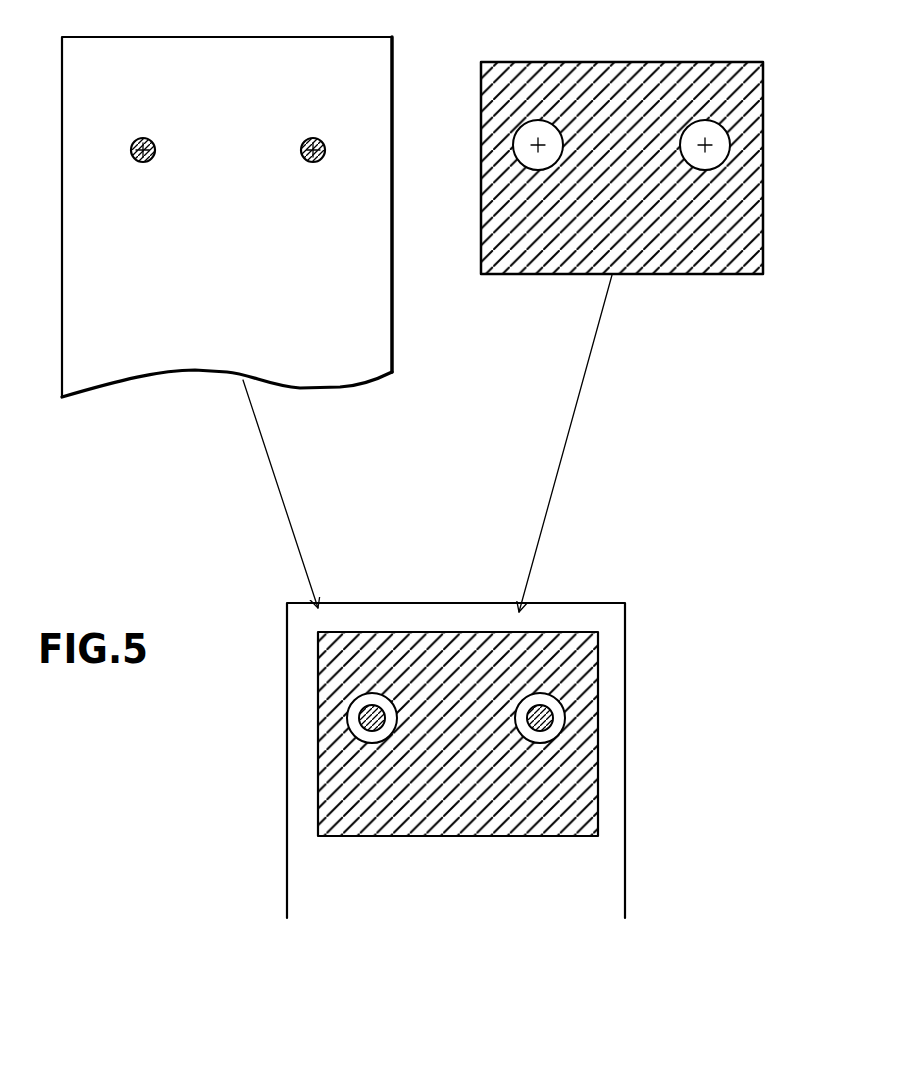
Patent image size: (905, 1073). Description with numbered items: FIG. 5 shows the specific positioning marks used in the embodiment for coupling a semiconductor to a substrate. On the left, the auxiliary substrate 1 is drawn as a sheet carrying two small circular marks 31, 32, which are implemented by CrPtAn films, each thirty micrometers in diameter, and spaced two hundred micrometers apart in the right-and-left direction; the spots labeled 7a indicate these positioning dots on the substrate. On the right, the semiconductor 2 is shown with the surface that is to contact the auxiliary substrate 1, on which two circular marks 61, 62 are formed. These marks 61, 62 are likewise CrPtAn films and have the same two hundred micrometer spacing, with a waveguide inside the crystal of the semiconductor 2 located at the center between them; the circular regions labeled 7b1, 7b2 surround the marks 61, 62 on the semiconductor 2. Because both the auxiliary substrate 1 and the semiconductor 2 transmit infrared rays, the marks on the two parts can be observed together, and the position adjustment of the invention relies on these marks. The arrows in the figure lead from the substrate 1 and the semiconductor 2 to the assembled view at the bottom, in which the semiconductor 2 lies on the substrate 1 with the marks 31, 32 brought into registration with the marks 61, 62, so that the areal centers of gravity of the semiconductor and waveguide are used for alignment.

The auxiliary substrate 1 is at (345, 357).
The semiconductor 2 is at (737, 222).
The mark 31 is at (135, 140).
The mark 32 is at (305, 140).
The positioning dots on sheet 1 7a is at (153, 140).
The circular mark 61 is at (526, 122).
The circular mark 62 is at (692, 122).
The first positioning hole 7b1 is at (546, 124).
The second positioning hole 7b2 is at (711, 124).